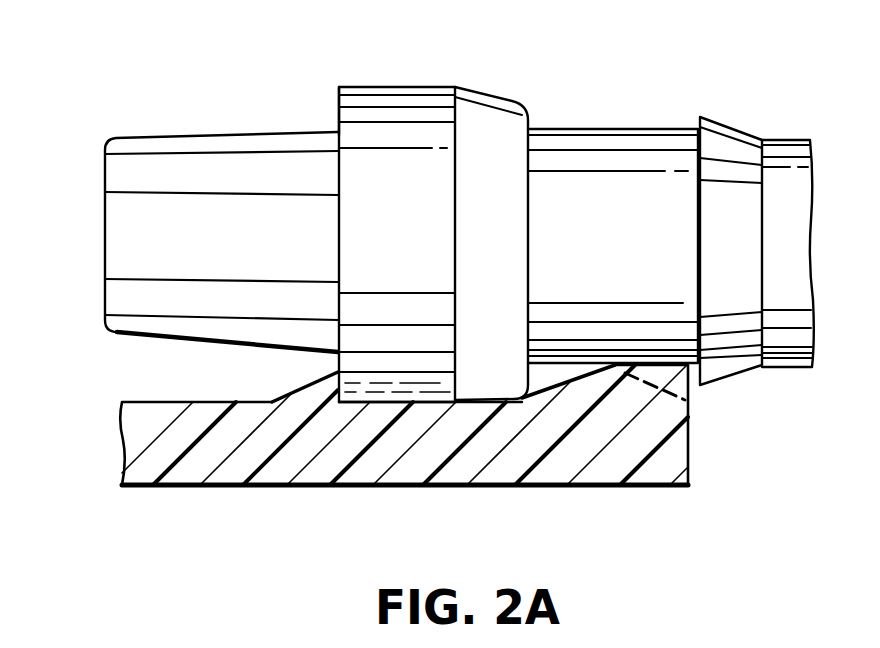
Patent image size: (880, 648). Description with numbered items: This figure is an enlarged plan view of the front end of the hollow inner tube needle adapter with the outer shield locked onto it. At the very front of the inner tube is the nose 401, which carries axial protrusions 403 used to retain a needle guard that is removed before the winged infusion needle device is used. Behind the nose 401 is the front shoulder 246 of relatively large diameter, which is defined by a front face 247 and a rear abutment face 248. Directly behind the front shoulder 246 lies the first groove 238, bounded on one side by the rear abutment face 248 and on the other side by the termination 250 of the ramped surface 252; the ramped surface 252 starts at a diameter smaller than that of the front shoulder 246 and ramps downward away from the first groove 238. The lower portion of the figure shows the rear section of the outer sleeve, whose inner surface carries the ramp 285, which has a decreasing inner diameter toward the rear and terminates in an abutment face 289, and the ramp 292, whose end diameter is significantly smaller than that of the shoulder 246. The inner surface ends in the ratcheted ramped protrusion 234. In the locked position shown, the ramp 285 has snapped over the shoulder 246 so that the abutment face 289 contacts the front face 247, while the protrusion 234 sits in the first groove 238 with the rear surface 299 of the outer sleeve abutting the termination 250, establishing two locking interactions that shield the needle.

The nose 401 is at (172, 136).
The axial protrusions 403 is at (118, 292).
The front face 247 is at (337, 114).
The front shoulder 246 is at (403, 87).
The rear abutment face 248 is at (530, 108).
The first groove 238 is at (638, 127).
The termination of ramped surface 250 is at (700, 120).
The ramped surface 252 is at (730, 117).
The abutment face 289 is at (343, 372).
The ramp 285 is at (303, 393).
The ramp 292 is at (572, 377).
The rear surface 299 is at (690, 420).
The ratcheted ramped protrusion 234 is at (663, 460).